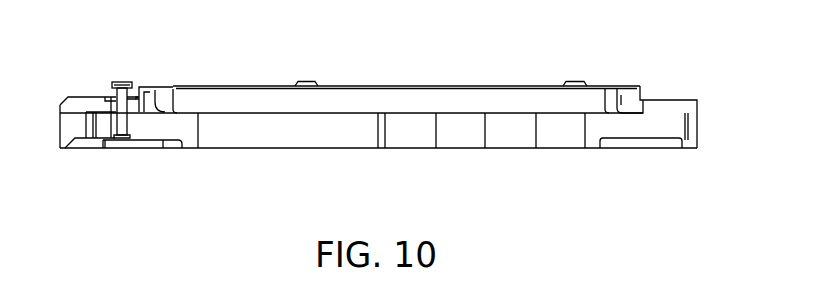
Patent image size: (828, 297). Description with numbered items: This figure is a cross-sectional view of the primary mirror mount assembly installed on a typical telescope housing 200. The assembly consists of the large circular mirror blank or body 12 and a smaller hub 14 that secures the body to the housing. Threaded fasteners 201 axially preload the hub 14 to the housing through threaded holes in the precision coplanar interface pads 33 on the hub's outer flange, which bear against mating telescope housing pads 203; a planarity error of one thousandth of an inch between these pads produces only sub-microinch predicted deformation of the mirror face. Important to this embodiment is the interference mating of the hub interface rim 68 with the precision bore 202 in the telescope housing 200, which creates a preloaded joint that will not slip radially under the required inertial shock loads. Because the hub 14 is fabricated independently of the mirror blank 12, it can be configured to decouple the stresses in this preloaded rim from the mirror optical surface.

The body 12 is at (648, 152).
The hub 14 is at (295, 155).
The coplanar pads 33 is at (135, 97).
The hub interface rim 68 is at (167, 88).
The telescope housing 200 is at (65, 128).
The threaded fasteners 201 is at (113, 84).
The precision bore 202 is at (618, 96).
The telescope housing pads 203 is at (147, 113).